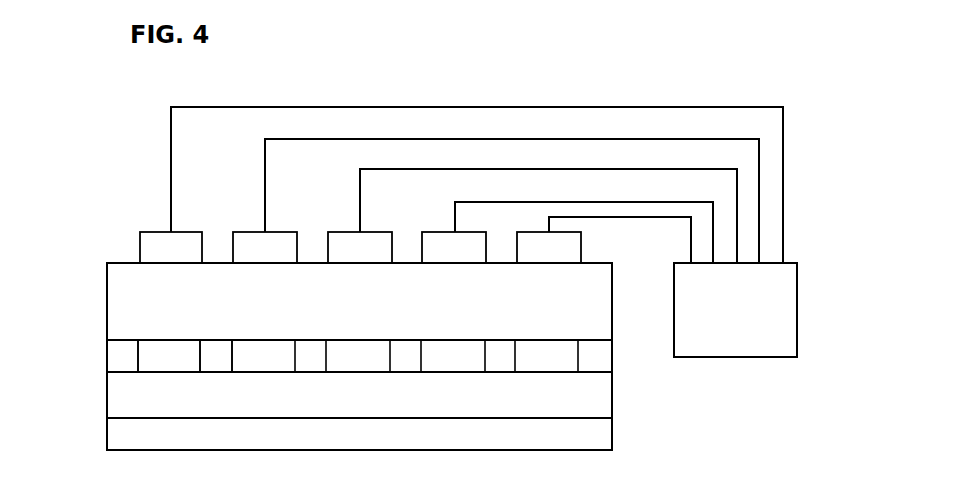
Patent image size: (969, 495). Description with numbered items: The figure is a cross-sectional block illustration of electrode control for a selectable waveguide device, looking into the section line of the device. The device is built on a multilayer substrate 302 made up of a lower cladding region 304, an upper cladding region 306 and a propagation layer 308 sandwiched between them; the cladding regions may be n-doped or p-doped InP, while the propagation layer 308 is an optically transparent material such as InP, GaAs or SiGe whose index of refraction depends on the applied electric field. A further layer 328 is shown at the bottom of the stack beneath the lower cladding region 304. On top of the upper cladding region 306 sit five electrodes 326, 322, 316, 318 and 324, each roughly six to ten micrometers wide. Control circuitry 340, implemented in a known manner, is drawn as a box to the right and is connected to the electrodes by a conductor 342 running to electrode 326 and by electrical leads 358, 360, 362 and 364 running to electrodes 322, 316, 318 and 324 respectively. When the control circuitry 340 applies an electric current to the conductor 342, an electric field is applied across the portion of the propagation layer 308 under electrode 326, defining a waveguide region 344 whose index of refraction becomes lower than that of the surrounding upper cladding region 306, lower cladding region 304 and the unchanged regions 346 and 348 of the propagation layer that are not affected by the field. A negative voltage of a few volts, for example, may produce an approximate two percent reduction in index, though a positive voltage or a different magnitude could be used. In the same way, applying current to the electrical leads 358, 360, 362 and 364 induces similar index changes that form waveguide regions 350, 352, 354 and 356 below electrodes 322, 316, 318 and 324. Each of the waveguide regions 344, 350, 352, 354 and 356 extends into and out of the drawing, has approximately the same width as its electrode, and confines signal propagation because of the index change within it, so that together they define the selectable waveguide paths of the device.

The multilayer substrate 302 is at (103, 257).
The lower cladding region 304 is at (112, 399).
The upper cladding region 306 is at (116, 307).
The propagation layer 308 is at (116, 359).
The electrode 316 is at (357, 265).
The electrode 318 is at (452, 265).
The electrode 322 is at (263, 265).
The electrode 324 is at (541, 265).
The electrode 326 is at (170, 265).
The bottom layer 328 is at (112, 439).
The control circuitry 340 is at (737, 358).
The conductor 342 is at (217, 106).
The waveguide region 344 is at (173, 373).
The unchanged region 346 is at (131, 339).
The unchanged region 348 is at (219, 339).
The waveguide region 350 is at (265, 373).
The waveguide region 352 is at (360, 373).
The waveguide region 354 is at (455, 373).
The waveguide region 356 is at (546, 373).
The electrical lead 358 is at (316, 138).
The electrical lead 360 is at (449, 168).
The electrical lead 362 is at (549, 200).
The electrical lead 364 is at (634, 218).